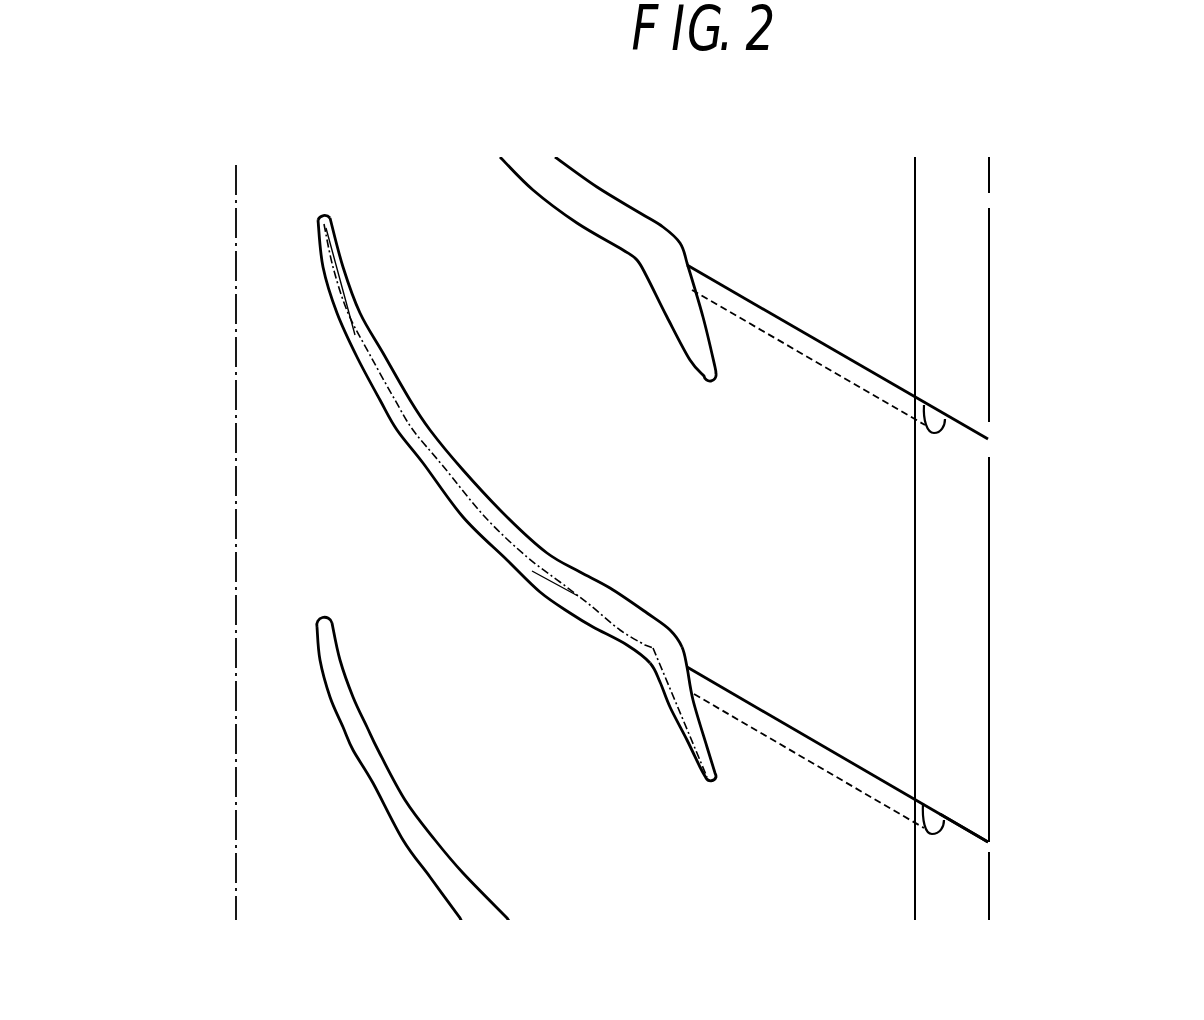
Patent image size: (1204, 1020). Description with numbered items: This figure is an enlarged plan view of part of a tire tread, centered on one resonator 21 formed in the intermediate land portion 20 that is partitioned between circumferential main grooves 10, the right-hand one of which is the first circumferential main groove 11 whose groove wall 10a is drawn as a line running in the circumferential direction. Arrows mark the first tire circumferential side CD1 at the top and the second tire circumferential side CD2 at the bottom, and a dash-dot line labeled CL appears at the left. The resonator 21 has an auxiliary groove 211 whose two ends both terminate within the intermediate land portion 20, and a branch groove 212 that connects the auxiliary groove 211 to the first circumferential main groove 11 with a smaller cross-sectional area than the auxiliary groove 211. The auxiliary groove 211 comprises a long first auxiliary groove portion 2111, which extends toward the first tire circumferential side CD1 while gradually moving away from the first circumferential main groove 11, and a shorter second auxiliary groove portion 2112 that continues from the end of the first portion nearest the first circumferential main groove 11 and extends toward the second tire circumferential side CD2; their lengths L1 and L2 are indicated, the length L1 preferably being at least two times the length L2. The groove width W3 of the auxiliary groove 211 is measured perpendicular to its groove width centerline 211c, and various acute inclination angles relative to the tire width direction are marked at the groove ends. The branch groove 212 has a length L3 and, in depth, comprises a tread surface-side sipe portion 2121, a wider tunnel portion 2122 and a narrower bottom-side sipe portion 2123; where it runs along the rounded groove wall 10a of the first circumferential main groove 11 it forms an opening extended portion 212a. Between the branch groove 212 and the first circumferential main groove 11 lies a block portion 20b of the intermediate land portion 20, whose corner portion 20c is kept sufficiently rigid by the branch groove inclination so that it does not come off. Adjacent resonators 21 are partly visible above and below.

The intermediate land portion 20 is at (450, 185).
The resonator 21 is at (681, 551).
The auxiliary groove 211 is at (529, 501).
The first auxiliary groove portion 2111 is at (462, 470).
The second auxiliary groove portion 2112 is at (663, 700).
The groove width centerline 211c is at (417, 430).
The branch groove 212 is at (787, 723).
The tread surface-side sipe portion 2121 is at (923, 803).
The tunnel portion 2122 is at (745, 722).
The bottom-side sipe portion 2123 is at (968, 828).
The opening extended portion 212a is at (988, 861).
The block portion 20b is at (842, 501).
The corner portion 20c is at (890, 725).
The first circumferential main groove 11 is at (1067, 142).
The circumferential main groove 10 is at (1022, 187).
The groove wall 10a is at (952, 562).
The length of the first auxiliary groove portion L1 is at (398, 385).
The length of the second auxiliary groove portion L2 is at (677, 715).
The length of the branch groove L3 is at (822, 744).
The groove width of the auxiliary groove W3 is at (610, 679).
The center line CL is at (235, 523).
The first tire circumferential side CD1 is at (1141, 227).
The second tire circumferential side CD2 is at (1133, 785).